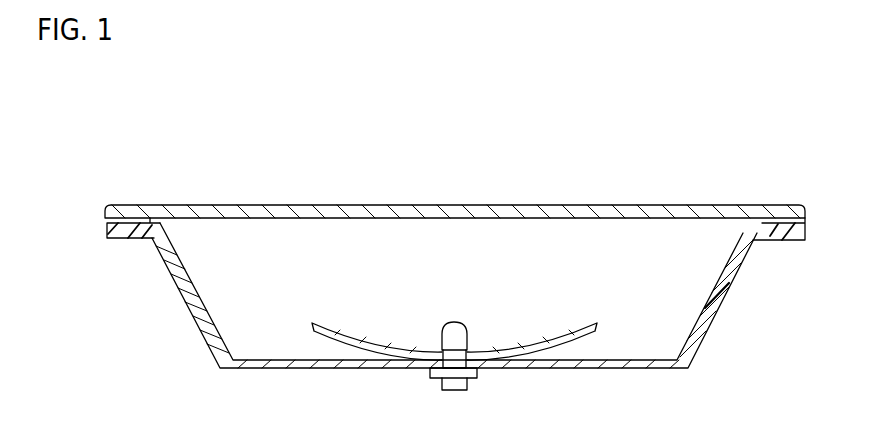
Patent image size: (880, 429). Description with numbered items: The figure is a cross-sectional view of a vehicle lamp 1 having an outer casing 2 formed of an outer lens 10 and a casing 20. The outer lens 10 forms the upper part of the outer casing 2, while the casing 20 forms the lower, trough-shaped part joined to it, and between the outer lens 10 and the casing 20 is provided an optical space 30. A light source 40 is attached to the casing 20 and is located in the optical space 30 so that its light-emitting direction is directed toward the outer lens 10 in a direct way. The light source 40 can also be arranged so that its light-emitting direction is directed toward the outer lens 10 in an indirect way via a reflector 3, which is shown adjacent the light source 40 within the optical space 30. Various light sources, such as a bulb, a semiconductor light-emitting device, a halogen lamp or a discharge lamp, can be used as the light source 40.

The vehicle lamp 1 is at (559, 170).
The outer casing 2 is at (778, 223).
The reflector 3 is at (325, 333).
The outer lens 10 is at (650, 207).
The casing 20 is at (718, 305).
The optical space 30 is at (270, 247).
The light source 40 is at (453, 322).